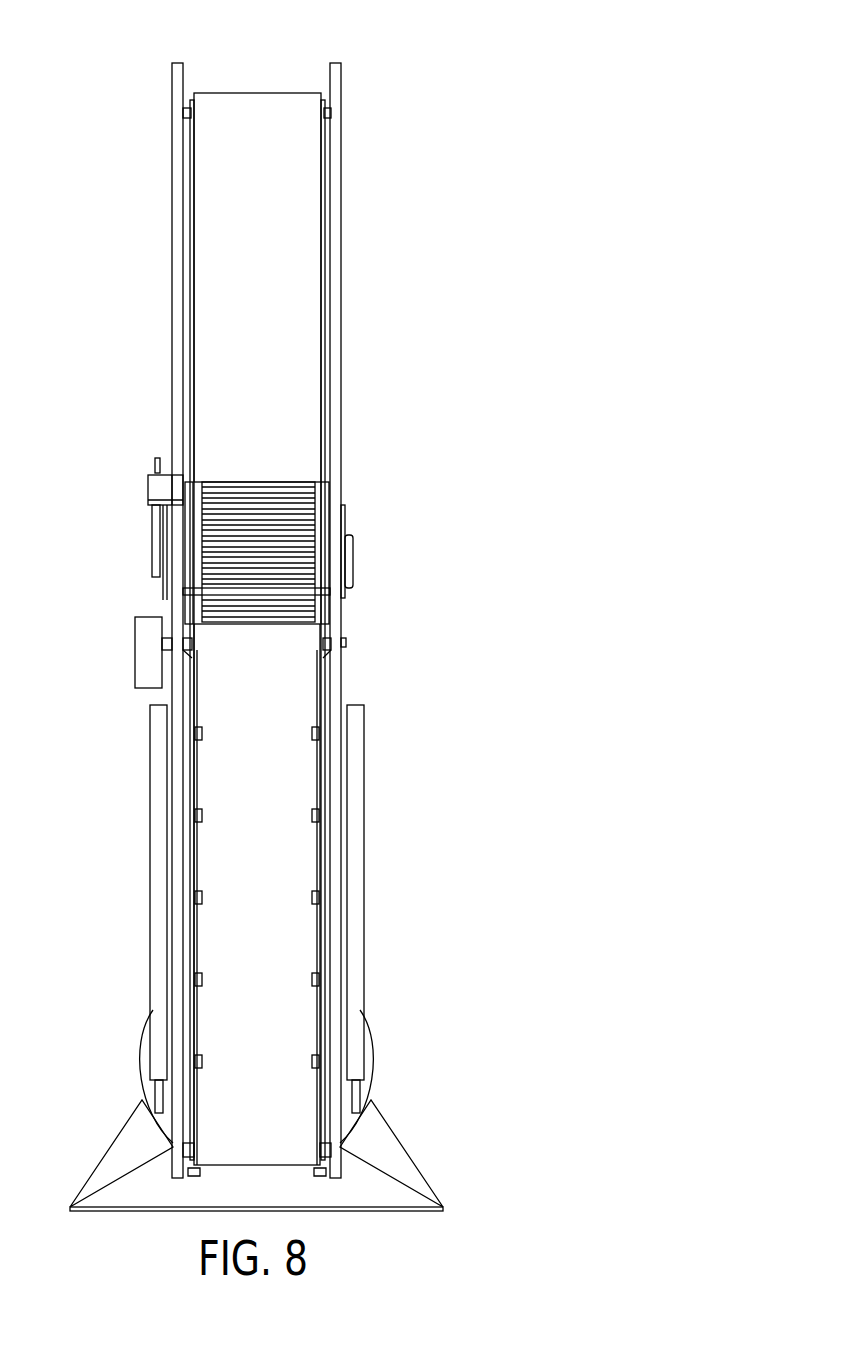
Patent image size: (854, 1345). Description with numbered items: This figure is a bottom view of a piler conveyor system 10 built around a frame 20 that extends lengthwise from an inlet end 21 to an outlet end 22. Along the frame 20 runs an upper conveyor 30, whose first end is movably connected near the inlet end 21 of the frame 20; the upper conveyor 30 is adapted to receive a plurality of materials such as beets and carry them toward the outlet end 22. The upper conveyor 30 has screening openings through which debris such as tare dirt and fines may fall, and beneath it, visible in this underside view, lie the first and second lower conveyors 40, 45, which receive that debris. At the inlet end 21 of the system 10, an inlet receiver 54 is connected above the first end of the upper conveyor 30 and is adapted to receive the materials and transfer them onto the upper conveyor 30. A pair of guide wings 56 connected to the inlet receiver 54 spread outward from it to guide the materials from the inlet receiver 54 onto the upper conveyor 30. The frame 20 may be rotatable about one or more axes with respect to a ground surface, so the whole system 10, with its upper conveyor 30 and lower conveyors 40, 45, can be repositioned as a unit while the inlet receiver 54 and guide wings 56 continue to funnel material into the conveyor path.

The piler conveyor system 10 is at (94, 121).
The frame 20 is at (344, 218).
The inlet end 21 is at (375, 1211).
The outlet end 22 is at (338, 62).
The upper conveyor 30 is at (300, 510).
The lower conveyor 40 is at (297, 795).
The lower conveyor 45 is at (307, 152).
The inlet receiver 54 is at (395, 1145).
The guide wings 56 is at (142, 1053).